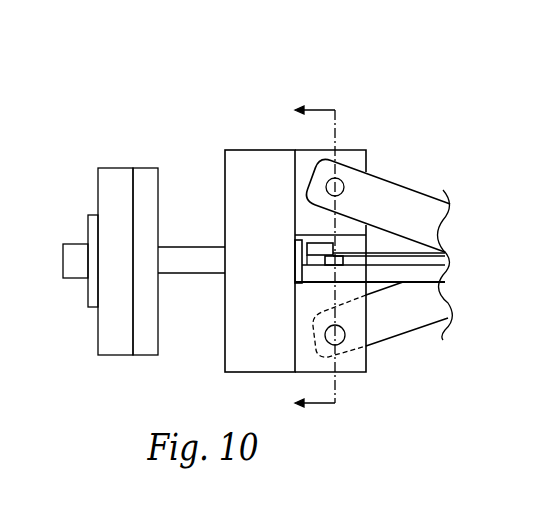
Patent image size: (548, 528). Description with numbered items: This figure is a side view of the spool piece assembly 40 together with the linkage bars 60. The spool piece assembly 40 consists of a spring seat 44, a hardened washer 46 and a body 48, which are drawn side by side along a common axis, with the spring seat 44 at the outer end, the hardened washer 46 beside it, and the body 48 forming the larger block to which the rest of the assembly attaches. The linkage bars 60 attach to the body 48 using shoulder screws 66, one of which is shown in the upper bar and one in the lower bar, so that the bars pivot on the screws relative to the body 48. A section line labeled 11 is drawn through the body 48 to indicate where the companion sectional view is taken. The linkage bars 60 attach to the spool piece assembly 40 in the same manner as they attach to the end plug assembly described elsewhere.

The spool piece assembly 40 is at (202, 140).
The spring seat 44 is at (105, 188).
The hardened washer 46 is at (147, 188).
The body 48 is at (260, 173).
The linkage bars 60 is at (405, 203).
The shoulder screws 66 is at (348, 187).
The section line 11- 11 is at (315, 257).